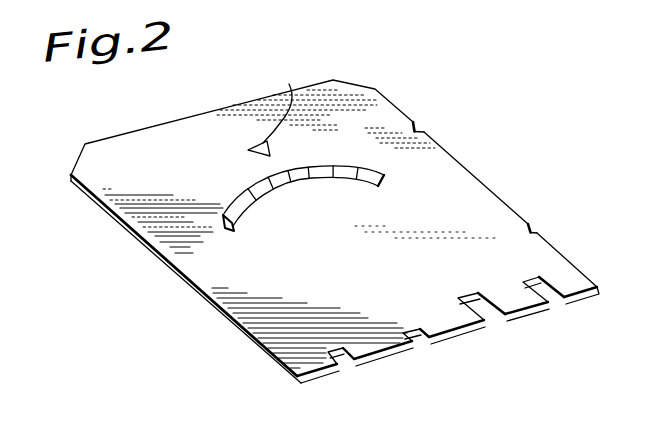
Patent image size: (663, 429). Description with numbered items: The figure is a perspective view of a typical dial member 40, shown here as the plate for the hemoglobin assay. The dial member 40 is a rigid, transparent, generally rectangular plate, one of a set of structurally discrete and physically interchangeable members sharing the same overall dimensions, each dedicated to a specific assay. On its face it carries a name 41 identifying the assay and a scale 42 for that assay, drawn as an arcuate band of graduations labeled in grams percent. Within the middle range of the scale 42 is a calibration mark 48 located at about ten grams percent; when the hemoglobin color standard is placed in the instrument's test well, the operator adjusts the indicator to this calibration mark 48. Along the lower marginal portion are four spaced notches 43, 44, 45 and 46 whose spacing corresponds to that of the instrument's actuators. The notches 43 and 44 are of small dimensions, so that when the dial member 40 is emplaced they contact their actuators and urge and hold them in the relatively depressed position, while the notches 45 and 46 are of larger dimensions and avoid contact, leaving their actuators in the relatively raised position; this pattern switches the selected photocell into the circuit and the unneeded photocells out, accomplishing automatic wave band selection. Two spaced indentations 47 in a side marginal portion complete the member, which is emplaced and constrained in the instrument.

The dial member 40 is at (264, 356).
The name 41 is at (153, 137).
The scale 42 is at (225, 216).
The notch 43 is at (340, 366).
The notch 44 is at (409, 346).
The notch 45 is at (493, 319).
The notch 46 is at (553, 305).
The indentation 47 is at (417, 129).
The calibration mark 48 is at (270, 114).